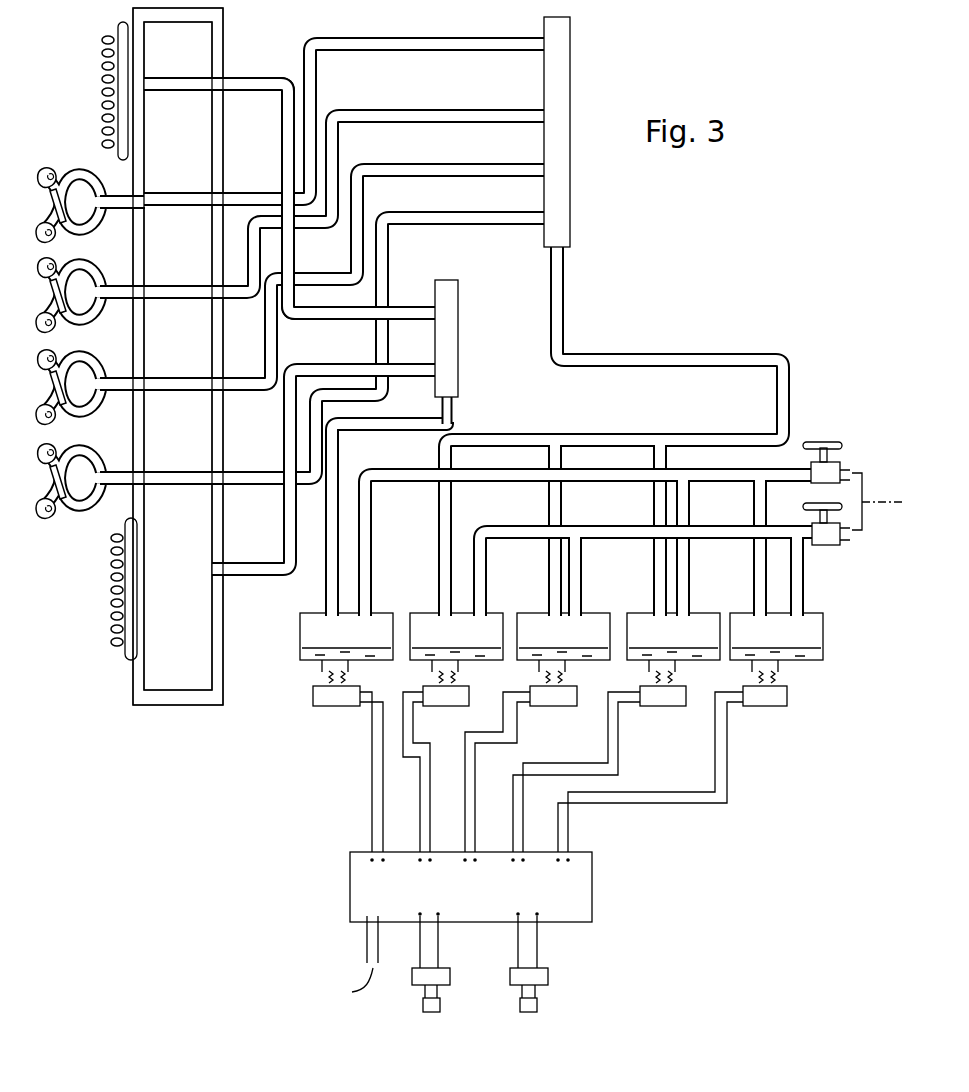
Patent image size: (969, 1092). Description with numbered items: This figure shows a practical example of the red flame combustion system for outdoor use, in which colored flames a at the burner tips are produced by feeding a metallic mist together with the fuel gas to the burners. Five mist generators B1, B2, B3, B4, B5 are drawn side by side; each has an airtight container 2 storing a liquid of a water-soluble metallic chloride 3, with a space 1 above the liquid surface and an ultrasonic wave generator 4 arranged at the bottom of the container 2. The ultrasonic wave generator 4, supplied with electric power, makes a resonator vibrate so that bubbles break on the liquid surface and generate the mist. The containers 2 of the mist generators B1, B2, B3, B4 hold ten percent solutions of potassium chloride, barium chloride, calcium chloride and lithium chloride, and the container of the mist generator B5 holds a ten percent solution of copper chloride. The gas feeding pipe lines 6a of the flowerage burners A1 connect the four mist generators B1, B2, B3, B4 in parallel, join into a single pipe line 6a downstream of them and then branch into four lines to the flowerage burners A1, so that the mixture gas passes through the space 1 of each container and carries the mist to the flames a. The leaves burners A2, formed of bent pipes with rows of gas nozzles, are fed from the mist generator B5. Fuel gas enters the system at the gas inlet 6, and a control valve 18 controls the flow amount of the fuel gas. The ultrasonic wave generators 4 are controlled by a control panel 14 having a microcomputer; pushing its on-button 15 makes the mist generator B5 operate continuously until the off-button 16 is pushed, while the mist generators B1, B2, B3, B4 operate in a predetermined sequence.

The space 1 is at (313, 613).
The airtight container 2 is at (318, 662).
The liquid of the water-soluble metallic chloride 3 is at (382, 656).
The ultrasonic wave generator 4 is at (332, 706).
The gas inlet valve 6 is at (897, 500).
The gas feeding pipe line 6a is at (563, 267).
The control panel 14 is at (592, 884).
The on-button 15 is at (423, 1010).
The off-button 16 is at (538, 1004).
The control valve 18 is at (828, 547).
The flowerage burner A1 is at (78, 165).
The leaves burner A2 is at (127, 662).
The flame a is at (43, 190).
The mist generator B1 is at (425, 613).
The mist generator B2 is at (537, 613).
The mist generator B3 is at (640, 613).
The mist generator B4 is at (826, 630).
The mist generator B5 is at (298, 636).